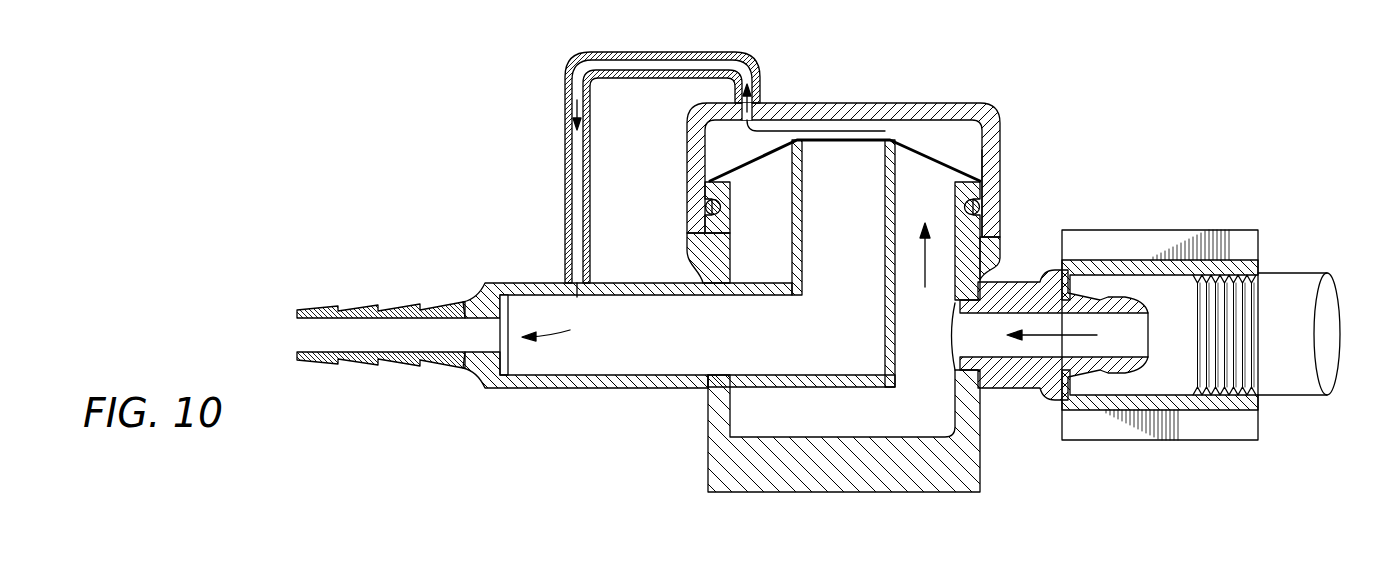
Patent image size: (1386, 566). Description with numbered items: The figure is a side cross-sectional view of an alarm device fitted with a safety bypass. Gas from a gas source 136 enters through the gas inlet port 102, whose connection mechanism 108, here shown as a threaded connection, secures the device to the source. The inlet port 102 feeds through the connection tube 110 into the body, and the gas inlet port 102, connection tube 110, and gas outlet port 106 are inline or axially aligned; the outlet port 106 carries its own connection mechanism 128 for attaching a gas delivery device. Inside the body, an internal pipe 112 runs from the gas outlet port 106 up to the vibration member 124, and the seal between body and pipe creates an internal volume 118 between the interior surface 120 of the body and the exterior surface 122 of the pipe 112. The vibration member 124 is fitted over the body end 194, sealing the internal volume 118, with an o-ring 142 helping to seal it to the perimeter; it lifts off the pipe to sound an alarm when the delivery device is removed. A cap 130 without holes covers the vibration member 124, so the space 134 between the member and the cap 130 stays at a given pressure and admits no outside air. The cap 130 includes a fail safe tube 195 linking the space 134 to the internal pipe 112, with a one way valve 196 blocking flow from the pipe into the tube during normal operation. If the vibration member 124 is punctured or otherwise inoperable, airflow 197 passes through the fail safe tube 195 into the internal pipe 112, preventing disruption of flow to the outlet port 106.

The gas outlet port 106 is at (297, 330).
The connection mechanism 128 is at (352, 304).
The internal pipe 112 is at (812, 385).
The internal volume 118 is at (950, 405).
The exterior surface 122 is at (893, 342).
The interior surface 120 is at (958, 243).
The cap 130 is at (917, 112).
The space 134 is at (937, 147).
The airflow 197 is at (838, 128).
The body end 194 is at (941, 165).
The vibration member 124 is at (733, 174).
The o-ring 142 is at (980, 207).
The fail safe tube 195 is at (648, 52).
The one way valve 196 is at (574, 200).
The connection tube 110 is at (1005, 283).
The connection mechanism 108 is at (1218, 428).
The gas inlet port 102 is at (1248, 363).
The gas source 136 is at (1296, 273).